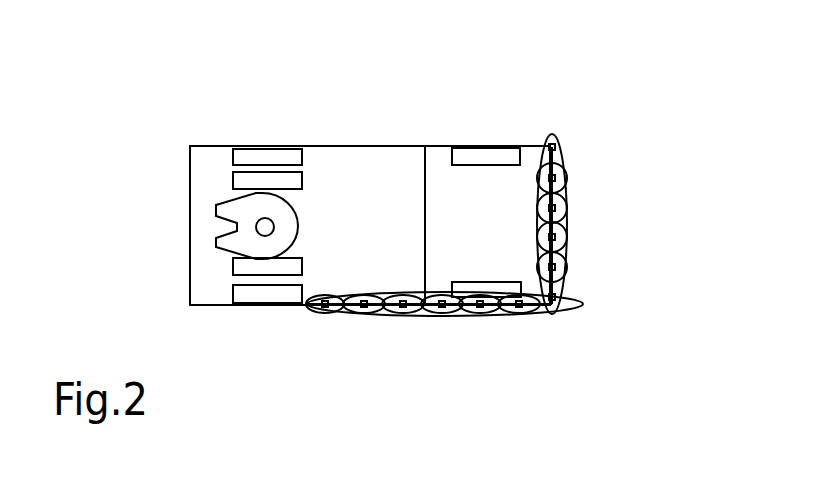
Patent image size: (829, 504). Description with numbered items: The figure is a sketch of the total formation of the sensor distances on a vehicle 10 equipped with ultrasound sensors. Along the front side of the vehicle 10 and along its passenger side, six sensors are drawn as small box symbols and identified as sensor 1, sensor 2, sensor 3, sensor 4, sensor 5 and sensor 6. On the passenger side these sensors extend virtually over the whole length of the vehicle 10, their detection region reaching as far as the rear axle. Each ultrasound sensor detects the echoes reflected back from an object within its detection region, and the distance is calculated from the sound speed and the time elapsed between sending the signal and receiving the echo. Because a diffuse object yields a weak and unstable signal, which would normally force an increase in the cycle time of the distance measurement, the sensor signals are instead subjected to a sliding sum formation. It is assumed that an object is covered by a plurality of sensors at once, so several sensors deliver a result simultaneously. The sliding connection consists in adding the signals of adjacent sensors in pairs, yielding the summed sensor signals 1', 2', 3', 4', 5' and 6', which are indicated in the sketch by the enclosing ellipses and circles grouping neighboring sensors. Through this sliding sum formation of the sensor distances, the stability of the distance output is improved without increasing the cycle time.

The vehicle 10 is at (491, 108).
The sensor 1 is at (563, 220).
The sensor 2 is at (543, 236).
The sensor 3 is at (525, 251).
The sensor 4 is at (506, 265).
The sensor 5 is at (486, 280).
The sensor 6 is at (460, 285).
The sensor signal 1' is at (589, 282).
The sensor signal 2' is at (569, 296).
The sensor signal 3' is at (550, 311).
The sensor signal 4' is at (531, 326).
The sensor signal 5' is at (511, 341).
The sensor signal 6' is at (332, 362).